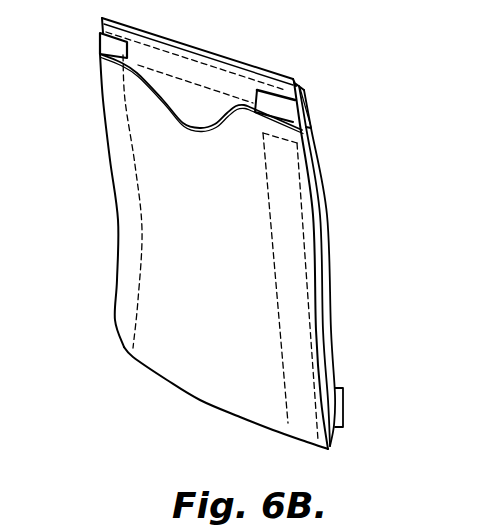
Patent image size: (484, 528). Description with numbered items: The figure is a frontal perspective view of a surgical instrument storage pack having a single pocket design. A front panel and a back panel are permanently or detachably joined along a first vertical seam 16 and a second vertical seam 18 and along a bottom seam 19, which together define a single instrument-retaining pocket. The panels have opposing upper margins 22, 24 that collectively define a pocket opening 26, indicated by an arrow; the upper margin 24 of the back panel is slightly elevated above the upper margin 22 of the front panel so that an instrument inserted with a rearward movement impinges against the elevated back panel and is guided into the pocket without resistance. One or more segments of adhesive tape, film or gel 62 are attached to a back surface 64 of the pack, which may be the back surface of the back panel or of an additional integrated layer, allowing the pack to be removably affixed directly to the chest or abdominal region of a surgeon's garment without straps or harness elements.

The first vertical seam 16 is at (122, 155).
The second vertical seam 18 is at (288, 185).
The bottom seam 19 is at (220, 407).
The upper margin of the front panel 22 is at (188, 126).
The upper margin of the back panel 24 is at (232, 60).
The pocket opening 26 is at (186, 112).
The adhesive tape, film or gel 62 is at (311, 110).
The back surface 64 is at (316, 150).